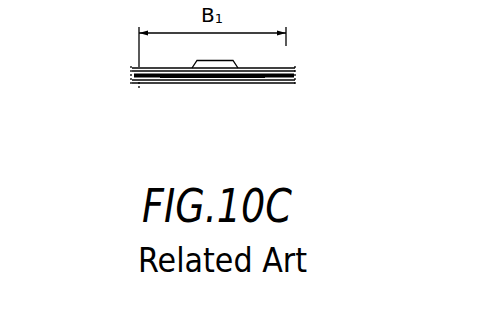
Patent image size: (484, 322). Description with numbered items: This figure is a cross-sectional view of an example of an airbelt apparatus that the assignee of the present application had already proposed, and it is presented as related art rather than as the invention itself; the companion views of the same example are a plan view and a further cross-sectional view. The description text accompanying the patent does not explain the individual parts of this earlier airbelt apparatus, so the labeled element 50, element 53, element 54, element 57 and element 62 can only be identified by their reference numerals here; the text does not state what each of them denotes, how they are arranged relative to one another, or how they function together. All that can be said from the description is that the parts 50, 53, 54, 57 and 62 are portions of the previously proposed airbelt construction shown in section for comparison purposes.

The organic EL element / substrate stack 50 is at (110, 77).
The electrode layer 53 is at (284, 69).
The sealing layer 54 is at (175, 83).
The end portion 57 is at (133, 66).
The light emitting layer 62 is at (231, 82).